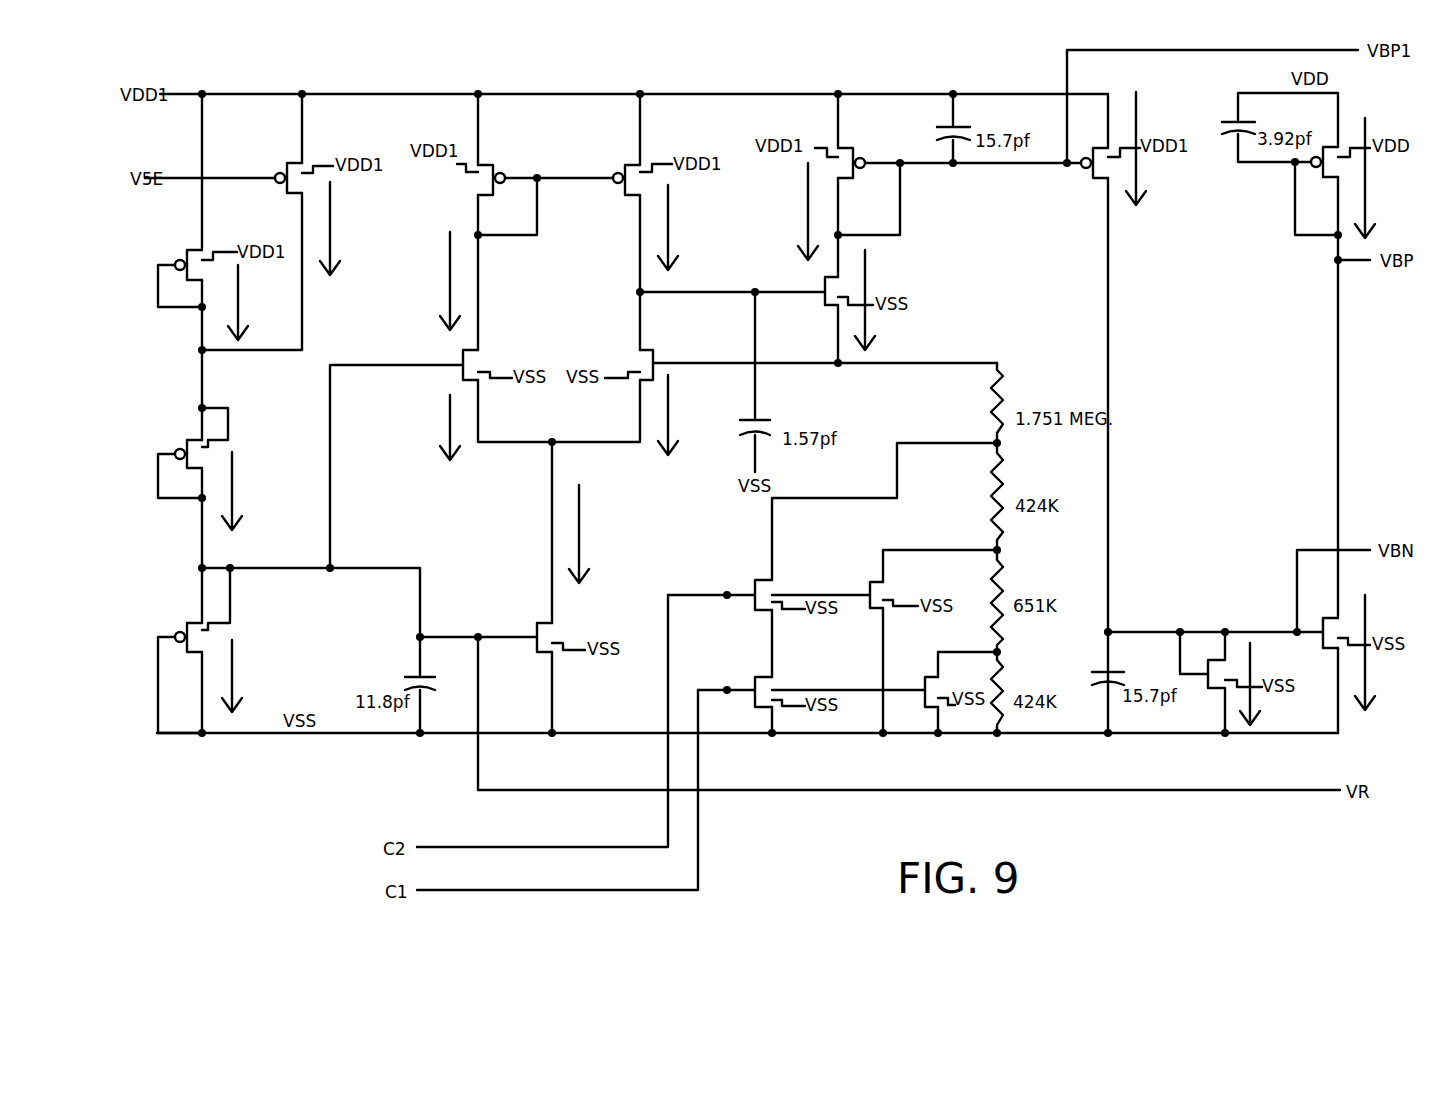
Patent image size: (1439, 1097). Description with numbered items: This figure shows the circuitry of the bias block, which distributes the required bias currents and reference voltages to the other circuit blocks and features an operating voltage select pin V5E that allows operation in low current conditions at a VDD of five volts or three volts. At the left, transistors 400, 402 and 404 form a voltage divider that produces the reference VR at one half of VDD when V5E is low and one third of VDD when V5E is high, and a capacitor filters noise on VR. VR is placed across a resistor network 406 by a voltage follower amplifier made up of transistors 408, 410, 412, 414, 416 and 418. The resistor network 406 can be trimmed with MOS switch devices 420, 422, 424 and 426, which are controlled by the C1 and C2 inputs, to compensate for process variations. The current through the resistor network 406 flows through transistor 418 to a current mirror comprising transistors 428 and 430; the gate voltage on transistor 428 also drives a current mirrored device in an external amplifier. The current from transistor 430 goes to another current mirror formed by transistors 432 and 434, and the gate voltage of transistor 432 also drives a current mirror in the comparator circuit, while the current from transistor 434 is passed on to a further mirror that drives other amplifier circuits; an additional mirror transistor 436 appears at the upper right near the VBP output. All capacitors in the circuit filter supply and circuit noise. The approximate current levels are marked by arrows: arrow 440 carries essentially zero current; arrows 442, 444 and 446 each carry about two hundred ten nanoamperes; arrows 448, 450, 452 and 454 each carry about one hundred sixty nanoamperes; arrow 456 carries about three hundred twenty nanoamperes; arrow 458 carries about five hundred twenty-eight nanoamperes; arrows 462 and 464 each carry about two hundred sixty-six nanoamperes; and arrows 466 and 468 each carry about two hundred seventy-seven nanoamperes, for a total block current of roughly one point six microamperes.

The transistor 400 is at (187, 625).
The transistor 402 is at (187, 438).
The transistor 404 is at (187, 255).
The resistor network 406 is at (287, 167).
The transistor 408 is at (463, 373).
The transistor 410 is at (653, 367).
The transistor 412 is at (489, 160).
The transistor 414 is at (623, 167).
The transistor 416 is at (537, 630).
The transistor 418 is at (840, 285).
The MOS switch device 420 is at (927, 680).
The MOS switch device 422 is at (870, 587).
The MOS switch device 424 is at (755, 680).
The MOS switch device 426 is at (755, 587).
The transistor 428 is at (860, 157).
The transistor 430 is at (1117, 165).
The transistor 432 is at (1210, 692).
The transistor 434 is at (1323, 643).
The p-channel transistor 436 is at (1333, 167).
The arrow 440 is at (238, 278).
The arrow 442 is at (232, 505).
The arrow 444 is at (232, 677).
The arrow 446 is at (330, 232).
The arrow 448 is at (450, 258).
The arrow 450 is at (450, 415).
The arrow 452 is at (668, 238).
The arrow 454 is at (670, 417).
The arrow 456 is at (615, 517).
The arrow 458 is at (807, 218).
The arrow 462 is at (1135, 118).
The arrow 464 is at (1250, 693).
The arrow 466 is at (1363, 125).
The arrow 468 is at (1370, 677).